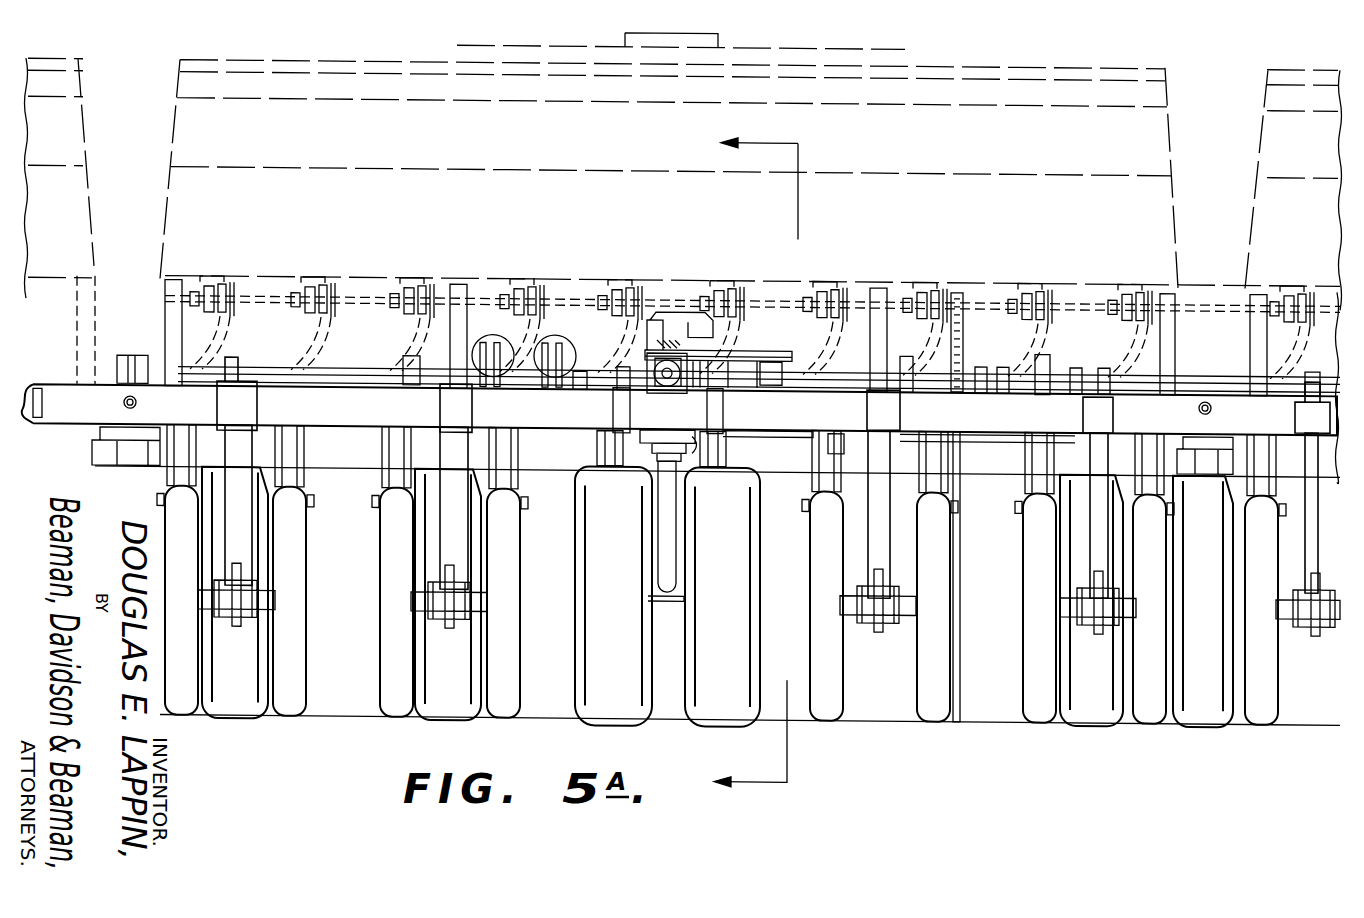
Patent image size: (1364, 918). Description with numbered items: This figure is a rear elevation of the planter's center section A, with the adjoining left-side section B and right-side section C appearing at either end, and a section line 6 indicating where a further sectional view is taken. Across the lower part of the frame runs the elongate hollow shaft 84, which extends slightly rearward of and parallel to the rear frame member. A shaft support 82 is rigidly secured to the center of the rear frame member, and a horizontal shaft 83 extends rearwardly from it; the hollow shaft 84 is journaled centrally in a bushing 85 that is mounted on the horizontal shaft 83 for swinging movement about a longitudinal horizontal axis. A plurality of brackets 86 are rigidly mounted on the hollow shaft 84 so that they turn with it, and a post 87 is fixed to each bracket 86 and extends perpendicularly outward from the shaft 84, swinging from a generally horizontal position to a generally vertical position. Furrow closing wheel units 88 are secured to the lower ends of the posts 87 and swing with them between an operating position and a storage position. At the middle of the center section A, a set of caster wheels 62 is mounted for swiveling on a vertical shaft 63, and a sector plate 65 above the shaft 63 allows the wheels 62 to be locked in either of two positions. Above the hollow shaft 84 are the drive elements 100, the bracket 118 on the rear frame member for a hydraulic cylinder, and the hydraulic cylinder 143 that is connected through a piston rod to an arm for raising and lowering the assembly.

The section line 6- 6 is at (768, 469).
The caster wheels 62 is at (709, 724).
The vertical shaft 63 is at (667, 526).
The sector plate 65 is at (737, 346).
The shaft support 82 is at (677, 378).
The horizontal shaft 83 is at (667, 372).
The elongate hollow shaft 84 is at (344, 415).
The bushing 85 is at (657, 369).
The brackets 86 is at (250, 405).
The post 87 is at (240, 536).
The furrow closing wheel units 88 is at (183, 705).
The drive elements 100 is at (970, 352).
The bracket 118 is at (493, 329).
The hydraulic cylinder 143 is at (556, 329).
The center section A is at (921, 772).
The left-side section B is at (1245, 125).
The right-side section C is at (97, 105).